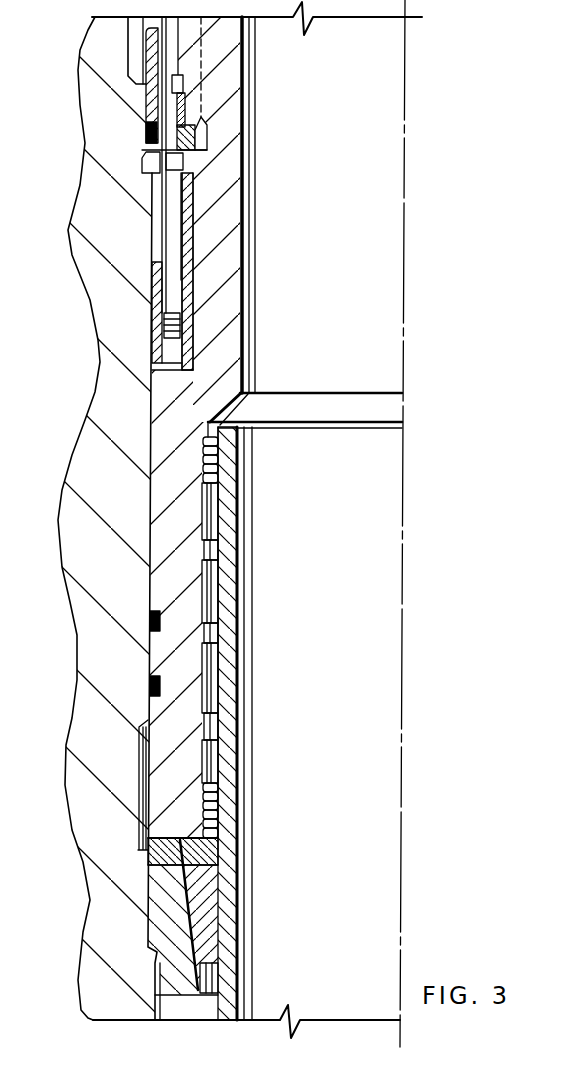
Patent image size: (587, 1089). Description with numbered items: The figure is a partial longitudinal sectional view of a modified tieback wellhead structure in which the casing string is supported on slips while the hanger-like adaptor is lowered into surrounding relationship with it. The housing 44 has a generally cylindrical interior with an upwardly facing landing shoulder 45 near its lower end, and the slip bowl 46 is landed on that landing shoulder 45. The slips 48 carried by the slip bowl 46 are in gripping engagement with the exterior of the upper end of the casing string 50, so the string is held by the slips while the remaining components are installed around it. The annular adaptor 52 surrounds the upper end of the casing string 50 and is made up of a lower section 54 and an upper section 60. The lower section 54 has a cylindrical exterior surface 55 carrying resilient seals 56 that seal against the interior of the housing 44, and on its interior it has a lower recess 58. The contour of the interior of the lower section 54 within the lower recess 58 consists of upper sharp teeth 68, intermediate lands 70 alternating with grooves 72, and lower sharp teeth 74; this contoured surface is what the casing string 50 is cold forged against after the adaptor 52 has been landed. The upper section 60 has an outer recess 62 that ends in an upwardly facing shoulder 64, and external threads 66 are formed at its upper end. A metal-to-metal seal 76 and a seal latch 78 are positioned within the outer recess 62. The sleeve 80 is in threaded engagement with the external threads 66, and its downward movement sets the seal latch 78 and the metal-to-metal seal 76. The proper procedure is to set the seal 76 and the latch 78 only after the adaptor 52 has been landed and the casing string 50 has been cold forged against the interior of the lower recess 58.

The housing 44 is at (59, 508).
The landing shoulder 45 is at (157, 952).
The slip bowl 46 is at (148, 885).
The slips 48 is at (147, 850).
The casing string 50 is at (233, 975).
The annular adaptor 52 is at (158, 410).
The lower section 54 is at (150, 568).
The cylindrical exterior surface 55 is at (150, 657).
The resilient seals 56 is at (150, 622).
The lower recess 58 is at (202, 517).
The upper section 60 is at (243, 175).
The outer recess 62 is at (165, 355).
The upwardly facing shoulder 64 is at (158, 364).
The external threads 66 is at (172, 78).
The upper sharp teeth 68 is at (205, 461).
The intermediate lands 70 is at (204, 552).
The grooves 72 is at (205, 591).
The lower sharp teeth 74 is at (202, 810).
The metal-to-metal seal 76 is at (160, 272).
The seal latch 78 is at (146, 144).
The sleeve 80 is at (128, 22).